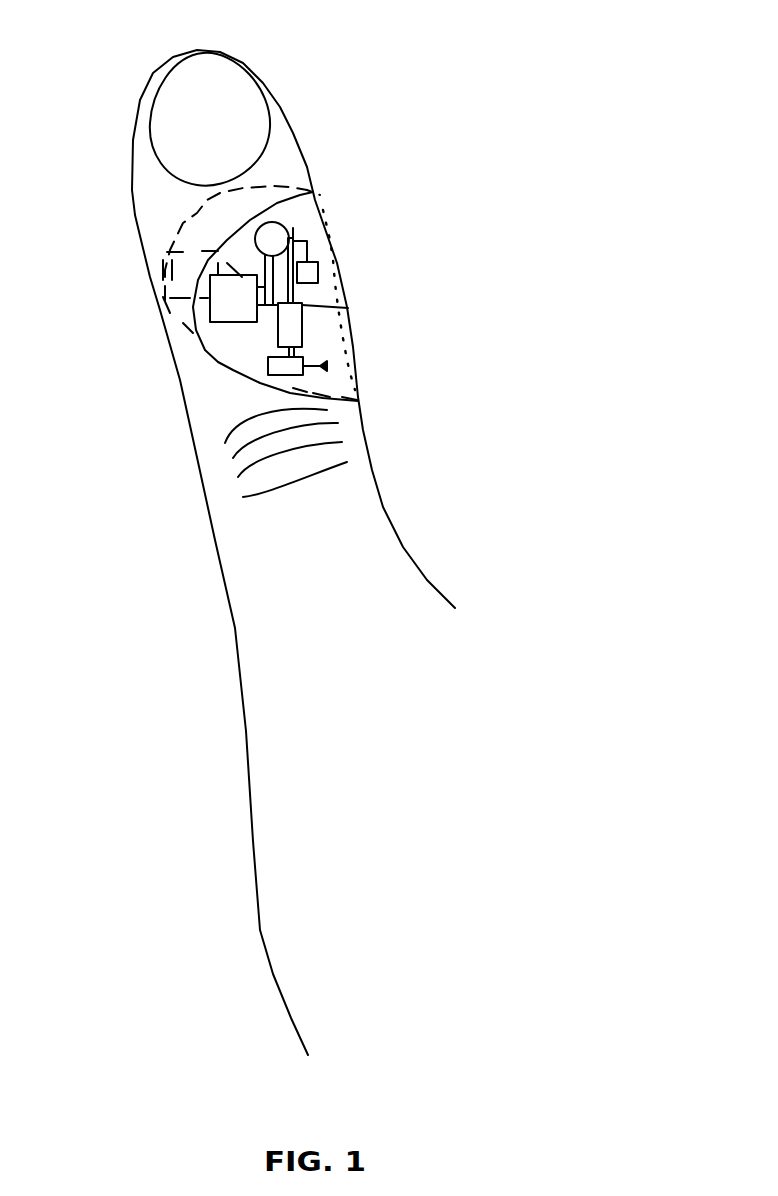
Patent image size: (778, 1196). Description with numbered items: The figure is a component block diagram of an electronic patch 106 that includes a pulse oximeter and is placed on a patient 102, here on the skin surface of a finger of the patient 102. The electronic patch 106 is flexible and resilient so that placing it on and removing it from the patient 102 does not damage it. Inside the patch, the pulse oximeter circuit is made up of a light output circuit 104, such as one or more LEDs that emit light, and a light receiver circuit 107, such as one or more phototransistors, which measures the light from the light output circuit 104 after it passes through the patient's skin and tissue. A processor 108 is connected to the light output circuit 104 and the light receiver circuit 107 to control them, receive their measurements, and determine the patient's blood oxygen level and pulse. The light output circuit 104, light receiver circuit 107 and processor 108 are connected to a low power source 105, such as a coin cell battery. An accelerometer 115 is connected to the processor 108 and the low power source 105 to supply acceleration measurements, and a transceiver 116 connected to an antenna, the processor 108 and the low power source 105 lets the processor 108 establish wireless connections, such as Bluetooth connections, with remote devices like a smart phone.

The patient 102 is at (293, 530).
The light output circuit 104 is at (180, 313).
The low power source 105 is at (340, 216).
The electronic patch 106 is at (350, 291).
The light receiver circuit 107 is at (103, 281).
The processor 108 is at (370, 342).
The accelerometer 115 is at (371, 255).
The transceiver 116 is at (367, 380).